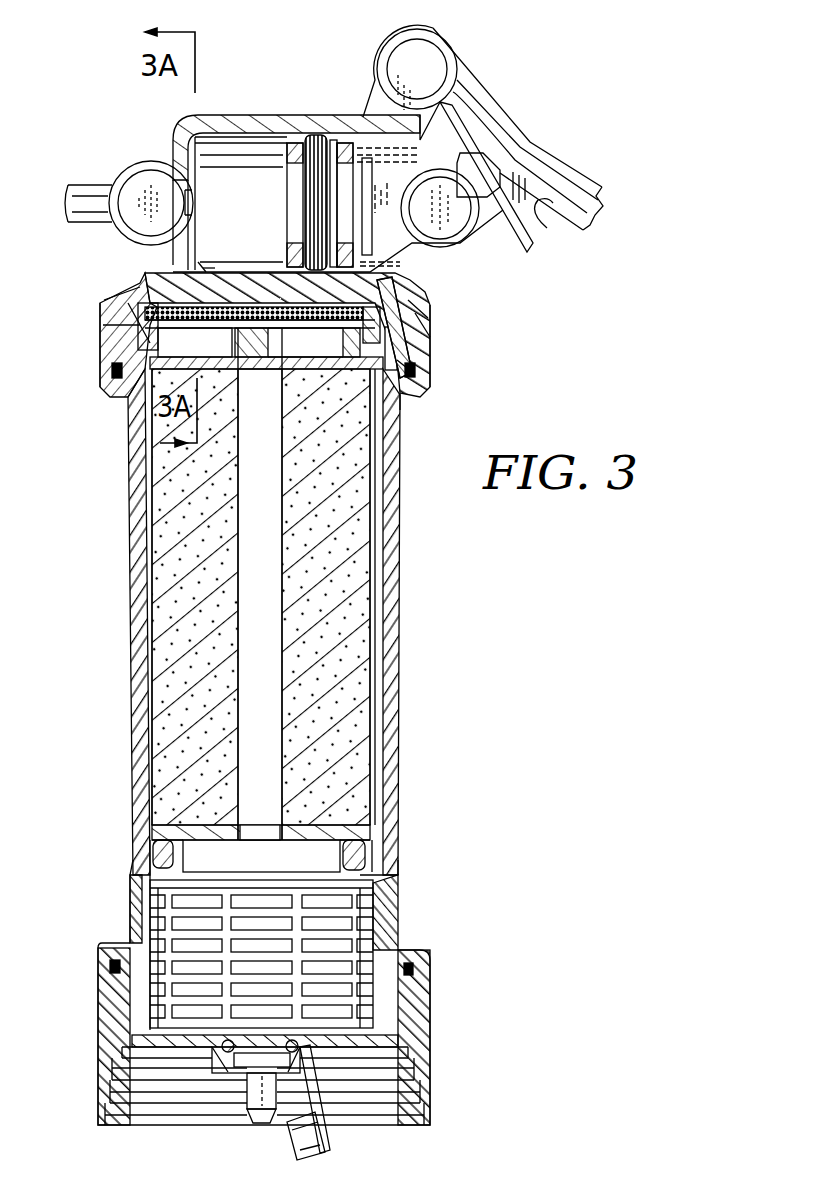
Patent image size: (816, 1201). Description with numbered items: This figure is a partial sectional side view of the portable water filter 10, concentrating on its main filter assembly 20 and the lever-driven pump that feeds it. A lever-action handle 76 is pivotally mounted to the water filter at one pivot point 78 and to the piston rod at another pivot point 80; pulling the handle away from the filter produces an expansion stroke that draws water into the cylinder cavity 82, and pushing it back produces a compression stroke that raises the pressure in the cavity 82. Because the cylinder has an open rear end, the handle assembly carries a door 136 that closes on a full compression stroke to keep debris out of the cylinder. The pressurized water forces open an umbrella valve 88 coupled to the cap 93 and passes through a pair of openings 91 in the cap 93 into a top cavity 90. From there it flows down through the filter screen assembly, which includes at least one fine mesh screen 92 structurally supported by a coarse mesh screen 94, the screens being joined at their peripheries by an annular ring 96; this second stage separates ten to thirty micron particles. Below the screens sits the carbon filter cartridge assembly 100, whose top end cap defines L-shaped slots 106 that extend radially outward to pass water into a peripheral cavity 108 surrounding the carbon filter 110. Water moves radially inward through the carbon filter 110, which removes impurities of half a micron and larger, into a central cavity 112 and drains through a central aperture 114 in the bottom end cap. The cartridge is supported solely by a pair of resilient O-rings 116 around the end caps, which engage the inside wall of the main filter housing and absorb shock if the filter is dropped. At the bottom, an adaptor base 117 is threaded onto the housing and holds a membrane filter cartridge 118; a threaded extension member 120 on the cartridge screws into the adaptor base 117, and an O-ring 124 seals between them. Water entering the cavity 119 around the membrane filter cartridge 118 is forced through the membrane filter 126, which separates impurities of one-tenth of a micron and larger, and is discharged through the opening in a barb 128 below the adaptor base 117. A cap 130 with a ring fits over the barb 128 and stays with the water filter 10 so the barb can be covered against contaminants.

The portable water filter 10 is at (88, 108).
The main filter assembly 20 is at (552, 332).
The lever-action handle 76 is at (582, 182).
The pivot point 78 is at (428, 67).
The pivot point 80 is at (448, 225).
The cylinder cavity 82 is at (203, 265).
The umbrella valve 88 is at (170, 275).
The top cavity 90 is at (283, 205).
The openings 91 is at (207, 268).
The fine mesh screen 92 is at (405, 284).
The cap 93 is at (105, 320).
The coarse mesh screen 94 is at (262, 372).
The annular ring 96 is at (118, 293).
The carbon filter cartridge assembly 100 is at (378, 420).
The L-shaped slots 106 is at (372, 378).
The peripheral cavity 108 is at (376, 583).
The carbon filter 110 is at (384, 527).
The central cavity 112 is at (275, 648).
The central aperture 114 is at (253, 833).
The O-rings 116 is at (118, 340).
The adaptor base 117 is at (420, 1037).
The membrane filter cartridge 118 is at (392, 880).
The cavity 119 is at (375, 925).
The threaded extension member 120 is at (224, 1052).
The O-ring 124 is at (307, 1048).
The membrane filter 126 is at (183, 925).
The barb 128 is at (262, 1112).
The cap 130 is at (308, 1158).
The door 136 is at (530, 240).